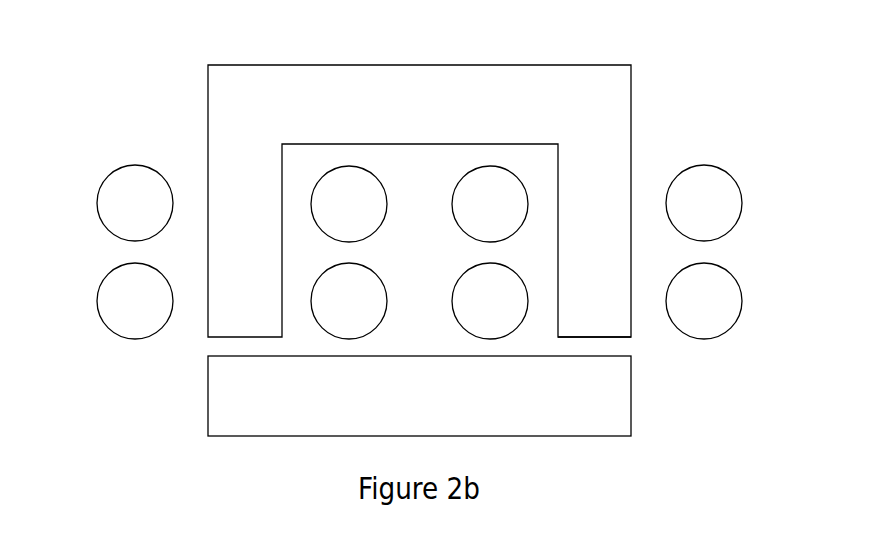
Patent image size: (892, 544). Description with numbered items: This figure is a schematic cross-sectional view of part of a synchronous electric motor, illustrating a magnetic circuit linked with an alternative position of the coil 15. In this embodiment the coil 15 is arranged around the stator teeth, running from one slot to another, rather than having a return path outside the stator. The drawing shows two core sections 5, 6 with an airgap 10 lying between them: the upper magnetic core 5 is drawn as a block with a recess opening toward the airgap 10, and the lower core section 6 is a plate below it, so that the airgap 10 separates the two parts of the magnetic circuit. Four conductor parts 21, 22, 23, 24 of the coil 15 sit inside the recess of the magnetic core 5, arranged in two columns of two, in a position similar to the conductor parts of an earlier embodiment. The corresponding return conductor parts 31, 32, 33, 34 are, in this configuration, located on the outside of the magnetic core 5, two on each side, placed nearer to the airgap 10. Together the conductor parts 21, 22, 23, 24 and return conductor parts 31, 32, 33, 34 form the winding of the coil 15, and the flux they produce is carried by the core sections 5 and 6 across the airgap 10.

The core section 5 is at (217, 106).
The core section 6 is at (218, 397).
The airgap 10 is at (613, 346).
The coil 15 is at (740, 152).
The conductor part 21 is at (339, 193).
The conductor part 22 is at (375, 295).
The conductor part 23 is at (500, 193).
The conductor part 24 is at (463, 295).
The return conductor part 31 is at (135, 203).
The return conductor part 32 is at (135, 302).
The return conductor part 33 is at (704, 204).
The return conductor part 34 is at (704, 302).